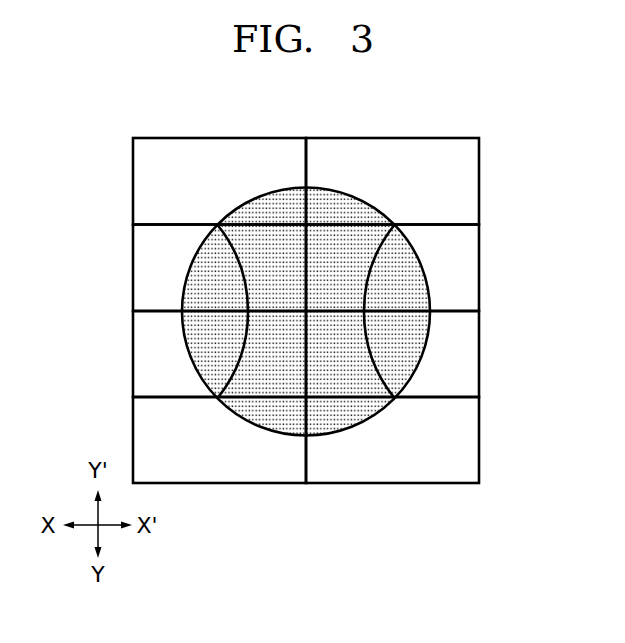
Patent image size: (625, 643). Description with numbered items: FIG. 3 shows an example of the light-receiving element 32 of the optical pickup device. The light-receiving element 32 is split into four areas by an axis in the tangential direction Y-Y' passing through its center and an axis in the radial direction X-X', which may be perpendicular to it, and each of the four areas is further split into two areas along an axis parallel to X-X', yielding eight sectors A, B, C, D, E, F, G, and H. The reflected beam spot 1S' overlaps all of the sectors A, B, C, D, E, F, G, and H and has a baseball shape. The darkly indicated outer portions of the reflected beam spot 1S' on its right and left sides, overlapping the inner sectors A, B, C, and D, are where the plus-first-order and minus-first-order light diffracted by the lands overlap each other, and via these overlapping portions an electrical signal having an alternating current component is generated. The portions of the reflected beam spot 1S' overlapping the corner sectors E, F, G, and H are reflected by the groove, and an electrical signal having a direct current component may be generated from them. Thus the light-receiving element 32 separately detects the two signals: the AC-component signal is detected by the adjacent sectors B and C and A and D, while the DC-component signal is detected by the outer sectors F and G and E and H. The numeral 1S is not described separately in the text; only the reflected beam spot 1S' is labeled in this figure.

The light-receiving element 32 is at (363, 308).
The reflected beam spot 1S' is at (306, 366).
The light spot image 1S is at (306, 312).
The sector A is at (219, 354).
The sector B is at (392, 354).
The sector C is at (392, 268).
The sector D is at (219, 268).
The sector E is at (219, 440).
The sector F is at (392, 440).
The sector G is at (392, 181).
The sector H is at (219, 181).